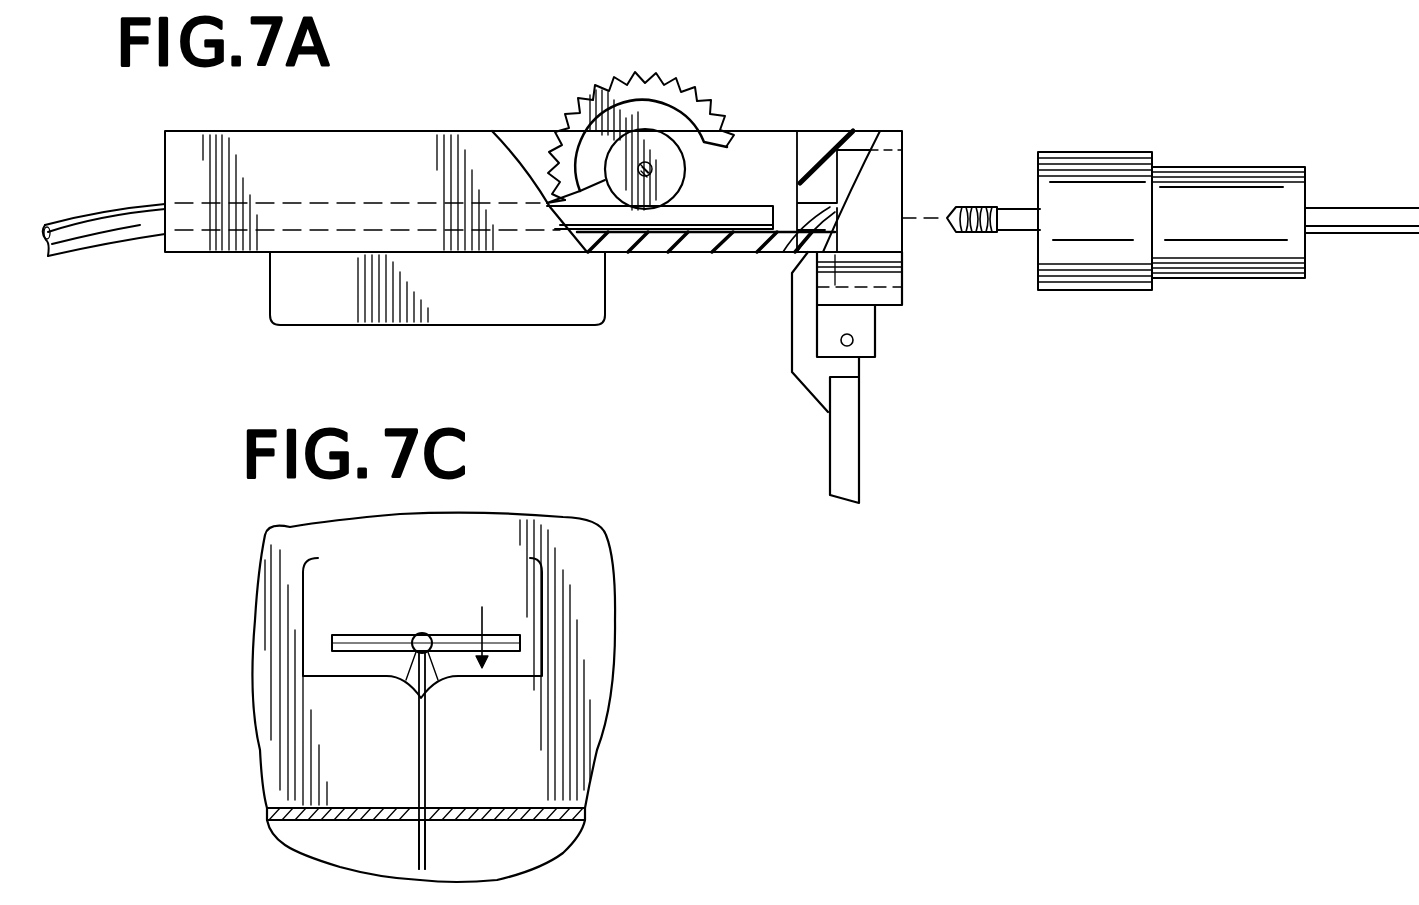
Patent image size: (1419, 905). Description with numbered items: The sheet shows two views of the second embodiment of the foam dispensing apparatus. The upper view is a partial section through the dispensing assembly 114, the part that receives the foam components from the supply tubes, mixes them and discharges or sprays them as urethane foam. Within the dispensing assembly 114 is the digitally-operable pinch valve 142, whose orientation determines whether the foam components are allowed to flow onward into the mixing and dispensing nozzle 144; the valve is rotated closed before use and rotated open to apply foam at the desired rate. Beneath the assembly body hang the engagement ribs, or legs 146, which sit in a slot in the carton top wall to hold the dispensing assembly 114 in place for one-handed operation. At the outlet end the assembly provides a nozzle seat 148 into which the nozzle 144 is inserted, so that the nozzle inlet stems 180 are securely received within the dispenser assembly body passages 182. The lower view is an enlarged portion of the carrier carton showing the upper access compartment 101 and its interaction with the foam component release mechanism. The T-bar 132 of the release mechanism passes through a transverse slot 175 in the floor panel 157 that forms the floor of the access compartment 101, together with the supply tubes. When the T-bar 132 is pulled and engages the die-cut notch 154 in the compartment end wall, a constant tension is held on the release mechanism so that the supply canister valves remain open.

In FIG. 7A, the dispensing assembly 114 is at (406, 128).
In FIG. 7A, the pinch valve 142 is at (662, 97).
In FIG. 7A, the nozzle 144 is at (1220, 167).
In FIG. 7A, the engagement ribs 146 is at (455, 297).
In FIG. 7A, the nozzle seat 148 is at (905, 180).
In FIG. 7A, the nozzle inlet stems 180 is at (984, 233).
In FIG. 7A, the dispenser assembly body passages 182 is at (800, 247).
In FIG. 7C, the access compartment 101 is at (572, 600).
In FIG. 7C, the die-cut notch 154 is at (543, 672).
In FIG. 7C, the T-bar 132 is at (426, 766).
In FIG. 7C, the floor panel 157 is at (555, 805).
In FIG. 7C, the transverse slot 175 is at (427, 820).